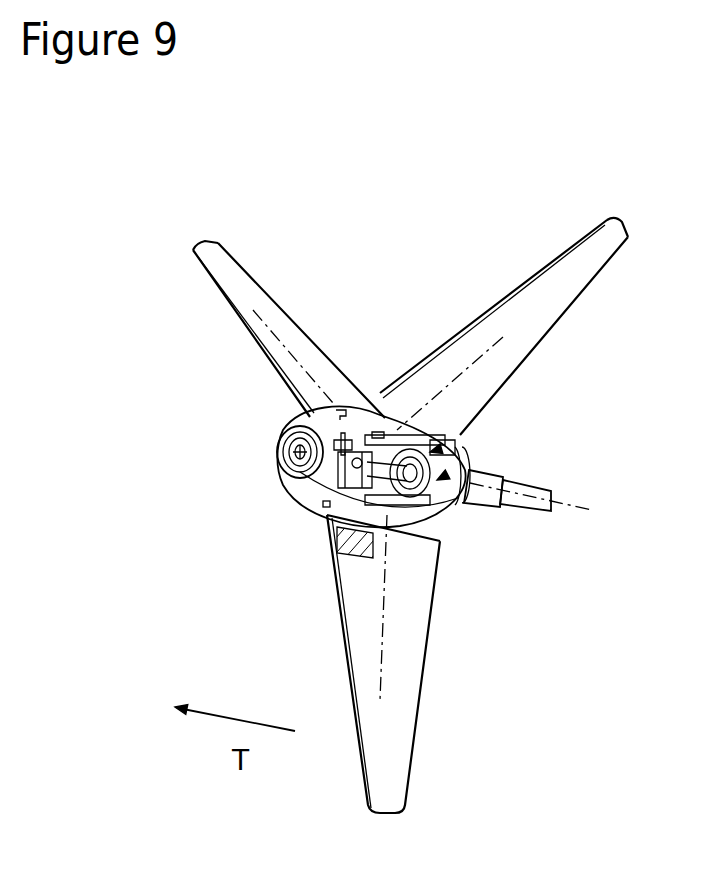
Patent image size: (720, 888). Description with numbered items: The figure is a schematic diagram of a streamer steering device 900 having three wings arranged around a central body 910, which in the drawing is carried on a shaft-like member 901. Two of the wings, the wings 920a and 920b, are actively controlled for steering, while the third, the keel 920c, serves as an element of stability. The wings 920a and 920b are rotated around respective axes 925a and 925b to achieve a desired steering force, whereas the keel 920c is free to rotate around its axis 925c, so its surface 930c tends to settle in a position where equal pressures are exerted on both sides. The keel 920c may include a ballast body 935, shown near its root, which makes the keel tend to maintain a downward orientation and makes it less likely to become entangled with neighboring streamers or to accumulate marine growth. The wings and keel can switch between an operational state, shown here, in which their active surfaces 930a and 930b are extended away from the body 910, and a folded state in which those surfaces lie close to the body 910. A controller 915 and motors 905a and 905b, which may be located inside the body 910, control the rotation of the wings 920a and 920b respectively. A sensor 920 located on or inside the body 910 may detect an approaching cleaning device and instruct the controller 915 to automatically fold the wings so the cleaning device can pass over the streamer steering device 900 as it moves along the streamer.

The streamer steering device 900 is at (388, 184).
The drive shaft 901 is at (545, 497).
The motor 905a is at (340, 410).
The motor 905b is at (378, 430).
The body 910 is at (432, 451).
The controller 915 is at (438, 479).
The sensor 920 is at (318, 490).
The wing 920a is at (203, 246).
The wing 920b is at (620, 224).
The keel 920c is at (380, 815).
The axis 925a is at (275, 345).
The axis 925b is at (457, 377).
The axis 925c is at (385, 595).
The active surface 930a is at (278, 318).
The active surface 930b is at (517, 313).
The surface 930c is at (393, 722).
The ballast body 935 is at (325, 534).